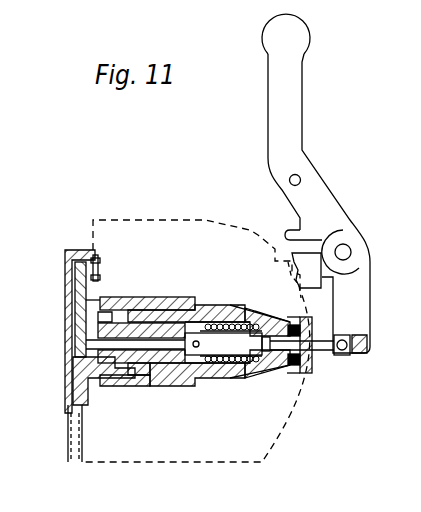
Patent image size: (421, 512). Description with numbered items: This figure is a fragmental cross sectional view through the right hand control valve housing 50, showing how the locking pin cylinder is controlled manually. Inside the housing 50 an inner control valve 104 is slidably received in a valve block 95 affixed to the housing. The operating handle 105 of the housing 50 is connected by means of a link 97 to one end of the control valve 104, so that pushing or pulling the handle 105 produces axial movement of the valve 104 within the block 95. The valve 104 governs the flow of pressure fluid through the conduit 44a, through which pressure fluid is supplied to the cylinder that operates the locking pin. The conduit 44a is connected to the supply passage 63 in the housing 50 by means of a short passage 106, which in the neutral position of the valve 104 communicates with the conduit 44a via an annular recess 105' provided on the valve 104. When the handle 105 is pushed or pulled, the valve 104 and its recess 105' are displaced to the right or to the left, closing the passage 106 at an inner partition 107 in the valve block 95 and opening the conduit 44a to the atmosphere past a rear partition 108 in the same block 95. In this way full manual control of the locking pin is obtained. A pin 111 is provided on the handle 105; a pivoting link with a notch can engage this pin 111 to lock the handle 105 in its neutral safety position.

The operating handle 105 is at (316, 183).
The pin 111 is at (300, 177).
The link 97 is at (318, 352).
The right hand control valve housing 50 is at (243, 242).
The supply passage 63 is at (100, 255).
The short passage 106 is at (80, 290).
The rear partition 108 is at (78, 328).
The annular recess 105' is at (171, 298).
The conduit 44a is at (80, 383).
The inner partition 107 is at (122, 386).
The inner control valve 104 is at (168, 378).
The valve block 95 is at (190, 370).